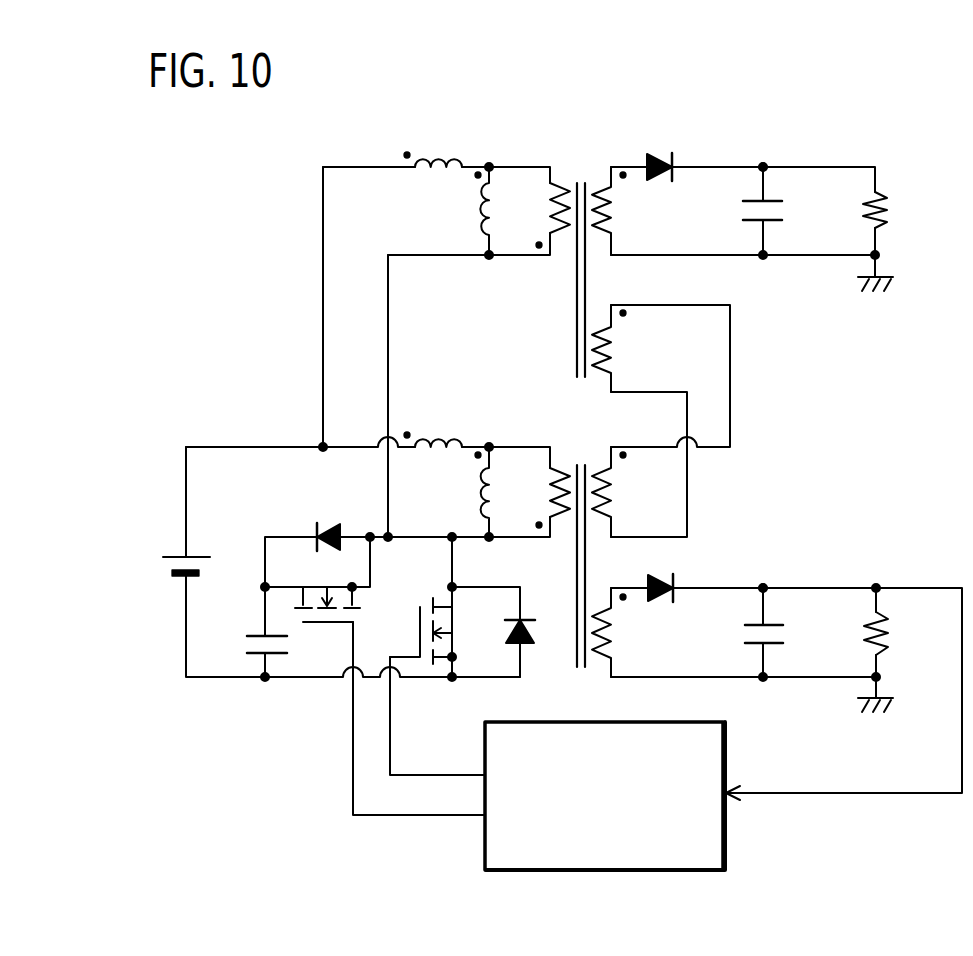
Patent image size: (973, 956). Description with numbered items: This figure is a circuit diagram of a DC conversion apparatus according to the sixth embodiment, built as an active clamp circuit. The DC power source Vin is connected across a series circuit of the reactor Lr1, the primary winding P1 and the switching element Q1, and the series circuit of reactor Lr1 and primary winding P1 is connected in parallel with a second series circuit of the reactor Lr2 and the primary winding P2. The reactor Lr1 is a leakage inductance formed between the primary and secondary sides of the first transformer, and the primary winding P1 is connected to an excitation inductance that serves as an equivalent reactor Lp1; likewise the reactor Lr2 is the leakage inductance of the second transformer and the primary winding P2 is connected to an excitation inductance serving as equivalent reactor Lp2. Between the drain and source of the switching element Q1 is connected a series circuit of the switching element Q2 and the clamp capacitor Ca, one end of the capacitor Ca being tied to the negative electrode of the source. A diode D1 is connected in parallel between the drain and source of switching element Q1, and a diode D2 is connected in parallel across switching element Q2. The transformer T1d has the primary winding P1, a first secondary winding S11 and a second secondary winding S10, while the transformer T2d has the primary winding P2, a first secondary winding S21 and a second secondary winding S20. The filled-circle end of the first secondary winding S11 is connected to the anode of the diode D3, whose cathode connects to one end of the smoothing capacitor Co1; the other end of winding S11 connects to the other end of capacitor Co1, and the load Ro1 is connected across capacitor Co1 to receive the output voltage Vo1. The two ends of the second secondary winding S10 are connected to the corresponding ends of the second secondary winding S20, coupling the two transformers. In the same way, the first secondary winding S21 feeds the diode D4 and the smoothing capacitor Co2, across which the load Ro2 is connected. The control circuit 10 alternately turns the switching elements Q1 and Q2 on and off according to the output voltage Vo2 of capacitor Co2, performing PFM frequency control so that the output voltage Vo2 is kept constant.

The control circuit 10 is at (725, 830).
The reactor Lr1 is at (433, 141).
The equivalent reactor Lp1 is at (458, 211).
The primary winding P1 is at (544, 215).
The transformer T1d is at (580, 266).
The first secondary winding S11 is at (624, 211).
The second secondary winding S10 is at (624, 348).
The diode D3 is at (658, 153).
The smoothing capacitor Co1 is at (737, 214).
The load Ro1 is at (896, 241).
The first output voltage Vo1 is at (763, 167).
The reactor Lr2 is at (433, 422).
The equivalent reactor Lp2 is at (458, 492).
The primary winding P2 is at (544, 498).
The transformer T2d is at (580, 551).
The second secondary winding S20 is at (624, 492).
The first secondary winding S21 is at (625, 632).
The diode D4 is at (660, 575).
The smoothing capacitor Co2 is at (739, 637).
The load Ro2 is at (897, 662).
The output voltage Vo2 is at (763, 588).
The input DC power supply Vin is at (166, 565).
The diode D2 is at (326, 523).
The switching element Q2 is at (317, 579).
The clamp capacitor Ca is at (249, 647).
The switching element Q1 is at (417, 632).
The diode D1 is at (528, 650).